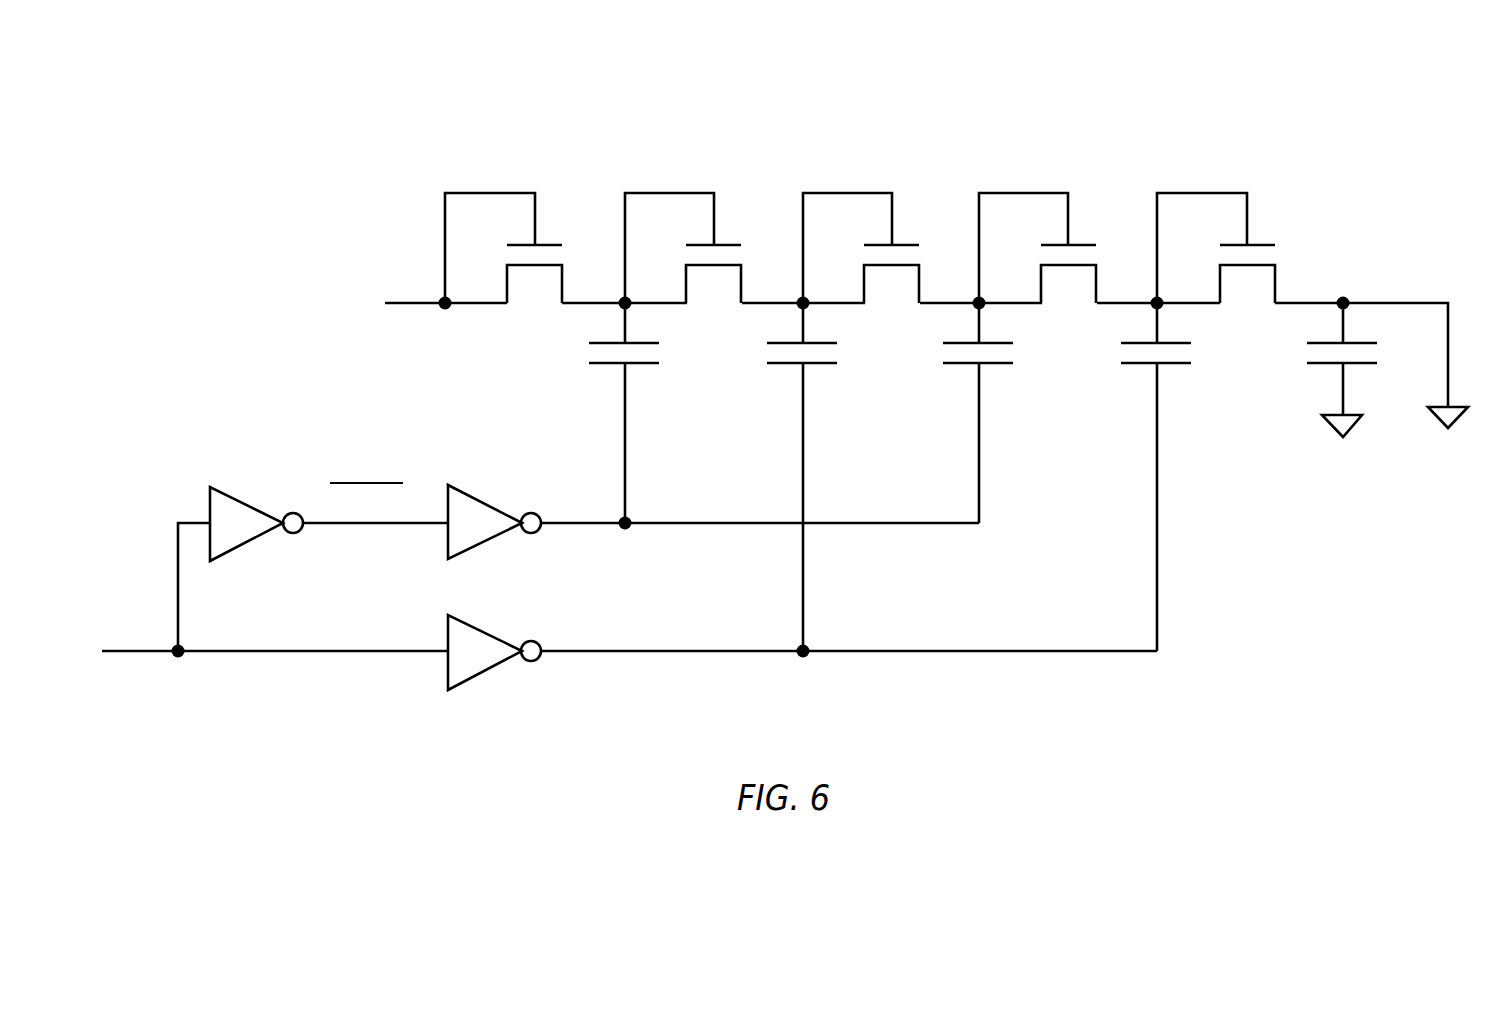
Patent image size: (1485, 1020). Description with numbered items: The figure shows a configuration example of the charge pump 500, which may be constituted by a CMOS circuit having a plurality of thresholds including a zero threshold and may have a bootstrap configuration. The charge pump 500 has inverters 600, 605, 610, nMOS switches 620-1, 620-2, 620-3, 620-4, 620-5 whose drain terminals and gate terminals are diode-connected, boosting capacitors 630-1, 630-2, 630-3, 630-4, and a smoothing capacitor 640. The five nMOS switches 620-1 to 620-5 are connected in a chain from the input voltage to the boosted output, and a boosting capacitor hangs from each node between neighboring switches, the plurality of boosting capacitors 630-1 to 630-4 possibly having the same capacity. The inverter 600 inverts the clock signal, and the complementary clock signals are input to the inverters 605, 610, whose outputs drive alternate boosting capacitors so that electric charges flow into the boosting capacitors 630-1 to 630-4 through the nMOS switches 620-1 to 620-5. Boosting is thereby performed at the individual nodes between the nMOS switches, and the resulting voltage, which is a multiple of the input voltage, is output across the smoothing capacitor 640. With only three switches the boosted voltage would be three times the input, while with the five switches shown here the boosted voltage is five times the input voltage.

The charge pump 500 is at (337, 91).
The inverter 600 is at (232, 490).
The inverter 605 is at (465, 490).
The inverter 610 is at (475, 628).
The nMOS switch 620-1 is at (545, 243).
The nMOS switch 620-2 is at (725, 243).
The nMOS switch 620-3 is at (903, 243).
The nMOS switch 620-4 is at (1079, 243).
The nMOS switch 620-5 is at (1257, 243).
The boosting capacitor 630-1 is at (641, 366).
The boosting capacitor 630-2 is at (819, 366).
The boosting capacitor 630-3 is at (995, 366).
The boosting capacitor 630-4 is at (1173, 366).
The smoothing capacitor 640 is at (1357, 366).